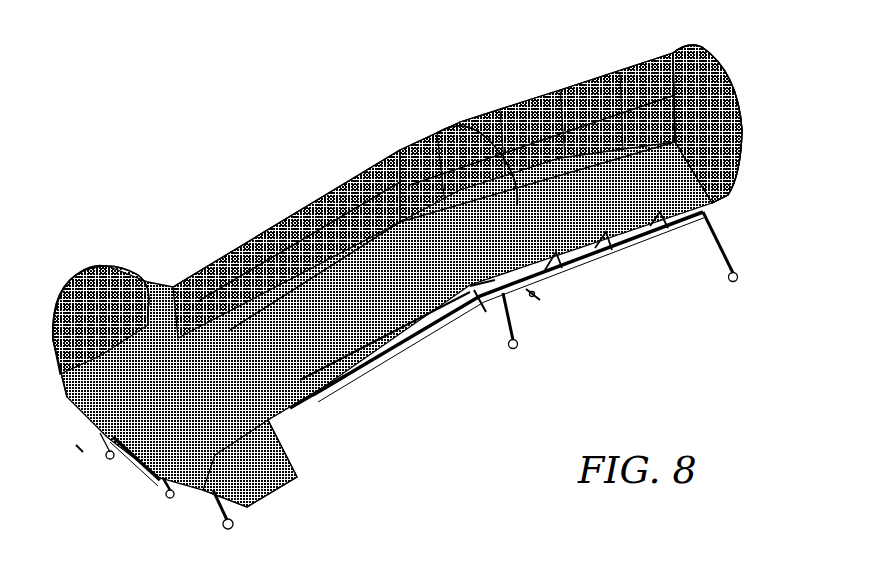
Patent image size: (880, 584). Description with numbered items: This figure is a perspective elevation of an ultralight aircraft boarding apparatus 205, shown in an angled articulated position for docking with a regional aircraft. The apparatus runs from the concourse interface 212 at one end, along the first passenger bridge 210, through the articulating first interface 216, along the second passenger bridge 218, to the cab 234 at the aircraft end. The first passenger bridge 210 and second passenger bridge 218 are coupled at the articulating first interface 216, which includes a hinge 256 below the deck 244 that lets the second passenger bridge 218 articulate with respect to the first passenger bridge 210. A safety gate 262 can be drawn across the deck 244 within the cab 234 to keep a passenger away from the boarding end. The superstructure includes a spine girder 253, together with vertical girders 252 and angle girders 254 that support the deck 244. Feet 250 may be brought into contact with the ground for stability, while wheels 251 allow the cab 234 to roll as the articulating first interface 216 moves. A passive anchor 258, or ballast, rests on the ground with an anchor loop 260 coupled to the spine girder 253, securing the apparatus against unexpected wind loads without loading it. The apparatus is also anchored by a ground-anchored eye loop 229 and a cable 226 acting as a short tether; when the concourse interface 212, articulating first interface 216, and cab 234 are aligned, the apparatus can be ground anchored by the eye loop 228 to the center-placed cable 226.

The tunnel assembly 205 is at (256, 73).
The first passenger bridge 210 is at (538, 95).
The concourse interface 212 is at (722, 78).
The articulating first interface 216 is at (460, 122).
The second passenger bridge 218 is at (330, 193).
The cab 234 is at (110, 268).
The deck 244 is at (268, 438).
The feet 250 is at (512, 348).
The wheels 251 is at (234, 524).
The vertical girders 252 is at (157, 465).
The spine girder 253 is at (388, 352).
The angle girders 254 is at (380, 373).
The hinge 256 is at (472, 302).
The passive anchor 258 is at (537, 298).
The anchor loop 260 is at (536, 294).
The safety gate 262 is at (320, 395).
The cable 226 is at (167, 487).
The eye loop 228 is at (76, 450).
The ground-anchored eye loop 229 is at (169, 498).